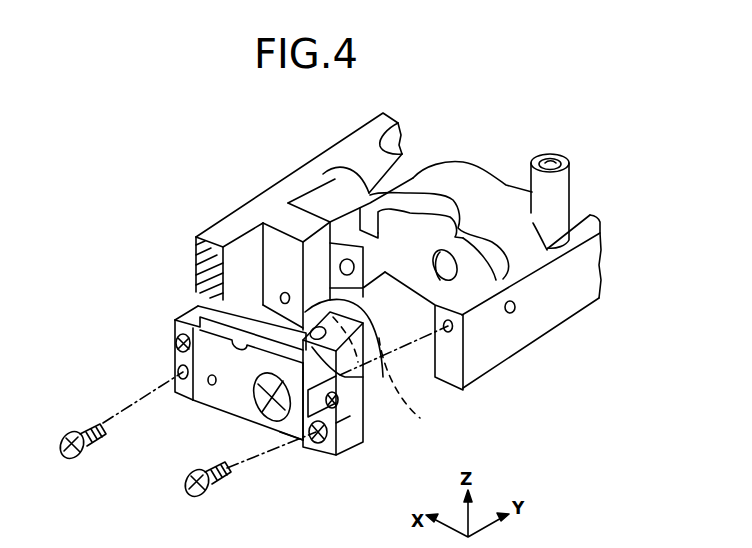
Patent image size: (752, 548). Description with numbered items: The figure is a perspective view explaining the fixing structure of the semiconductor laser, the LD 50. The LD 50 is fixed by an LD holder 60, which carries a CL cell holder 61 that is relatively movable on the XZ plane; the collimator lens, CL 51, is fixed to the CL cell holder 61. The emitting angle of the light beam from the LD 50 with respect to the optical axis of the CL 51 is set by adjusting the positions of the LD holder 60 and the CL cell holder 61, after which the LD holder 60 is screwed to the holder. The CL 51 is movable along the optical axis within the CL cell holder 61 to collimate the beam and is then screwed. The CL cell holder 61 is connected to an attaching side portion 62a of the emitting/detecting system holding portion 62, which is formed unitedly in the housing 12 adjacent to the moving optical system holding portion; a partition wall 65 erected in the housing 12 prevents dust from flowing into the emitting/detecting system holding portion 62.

The housing 12 is at (547, 322).
The LD 50 is at (250, 425).
The CL 51 is at (382, 366).
The LD holder 60 is at (285, 444).
The CL cell holder 61 is at (360, 413).
The emitting/detecting system holding portion 62 is at (322, 197).
The attaching side portion 62a is at (452, 358).
The partition wall 65 is at (255, 208).